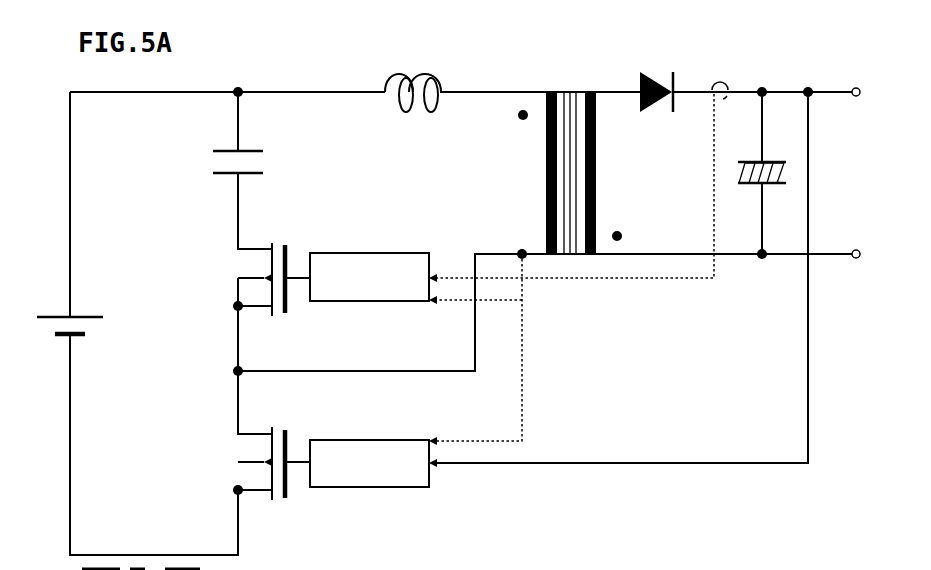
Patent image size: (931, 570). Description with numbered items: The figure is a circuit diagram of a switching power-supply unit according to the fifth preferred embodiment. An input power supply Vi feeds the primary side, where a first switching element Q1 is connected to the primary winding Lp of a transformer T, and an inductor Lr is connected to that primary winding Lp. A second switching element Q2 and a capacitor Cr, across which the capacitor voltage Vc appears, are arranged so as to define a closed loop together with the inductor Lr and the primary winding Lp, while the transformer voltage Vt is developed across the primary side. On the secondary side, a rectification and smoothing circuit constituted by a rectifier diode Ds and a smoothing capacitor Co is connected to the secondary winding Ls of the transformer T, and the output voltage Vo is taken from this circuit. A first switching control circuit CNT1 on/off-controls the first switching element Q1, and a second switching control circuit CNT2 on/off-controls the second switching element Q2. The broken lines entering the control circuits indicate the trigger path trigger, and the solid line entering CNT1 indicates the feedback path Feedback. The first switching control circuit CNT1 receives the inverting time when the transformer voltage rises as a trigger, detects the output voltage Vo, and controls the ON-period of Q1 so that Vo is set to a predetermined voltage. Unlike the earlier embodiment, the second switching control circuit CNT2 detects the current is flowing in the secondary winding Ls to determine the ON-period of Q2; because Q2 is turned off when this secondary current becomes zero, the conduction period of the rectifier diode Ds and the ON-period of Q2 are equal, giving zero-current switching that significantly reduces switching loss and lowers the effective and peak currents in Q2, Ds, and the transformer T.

The input power supply Vi is at (61, 333).
The capacitor Cr is at (214, 163).
The capacitor voltage Vc is at (272, 165).
The inductor Lr is at (419, 76).
The transformer T is at (576, 87).
The primary winding Lp is at (527, 151).
The secondary winding Ls is at (619, 205).
The transformer voltage Vt is at (485, 178).
The rectifier diode Ds is at (656, 78).
The current flowing in the secondary winding is is at (749, 74).
The smoothing capacitor Co is at (755, 184).
The output voltage Vo is at (850, 175).
The second switching element Q2 is at (246, 279).
The first switching element Q1 is at (246, 463).
The second switching control circuit CNT2 is at (416, 278).
The first switching control circuit CNT1 is at (369, 463).
The trigger path trigger is at (514, 349).
The feedback path Feedback is at (698, 445).